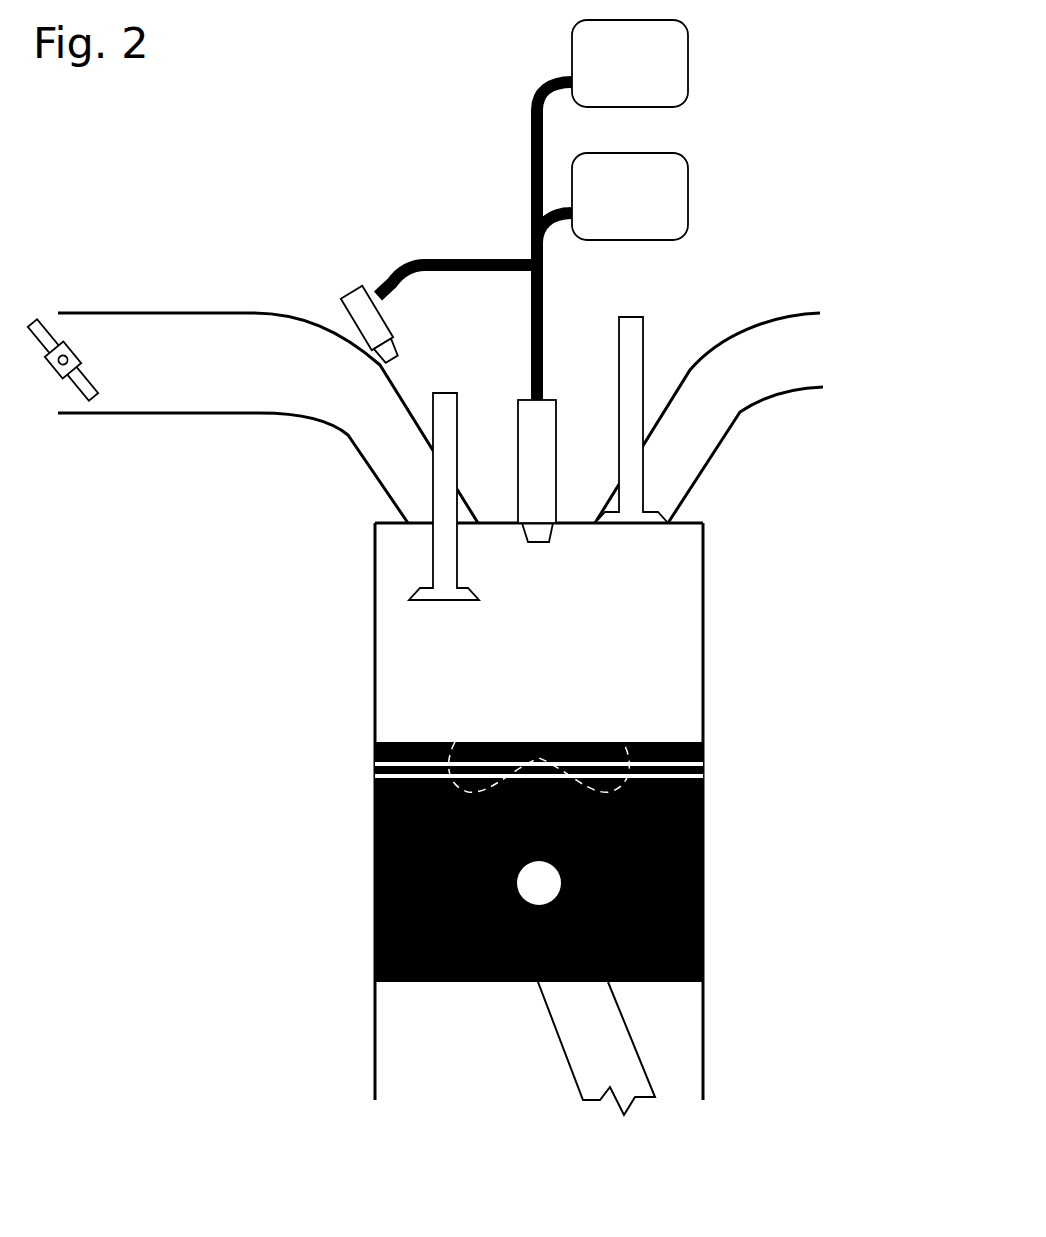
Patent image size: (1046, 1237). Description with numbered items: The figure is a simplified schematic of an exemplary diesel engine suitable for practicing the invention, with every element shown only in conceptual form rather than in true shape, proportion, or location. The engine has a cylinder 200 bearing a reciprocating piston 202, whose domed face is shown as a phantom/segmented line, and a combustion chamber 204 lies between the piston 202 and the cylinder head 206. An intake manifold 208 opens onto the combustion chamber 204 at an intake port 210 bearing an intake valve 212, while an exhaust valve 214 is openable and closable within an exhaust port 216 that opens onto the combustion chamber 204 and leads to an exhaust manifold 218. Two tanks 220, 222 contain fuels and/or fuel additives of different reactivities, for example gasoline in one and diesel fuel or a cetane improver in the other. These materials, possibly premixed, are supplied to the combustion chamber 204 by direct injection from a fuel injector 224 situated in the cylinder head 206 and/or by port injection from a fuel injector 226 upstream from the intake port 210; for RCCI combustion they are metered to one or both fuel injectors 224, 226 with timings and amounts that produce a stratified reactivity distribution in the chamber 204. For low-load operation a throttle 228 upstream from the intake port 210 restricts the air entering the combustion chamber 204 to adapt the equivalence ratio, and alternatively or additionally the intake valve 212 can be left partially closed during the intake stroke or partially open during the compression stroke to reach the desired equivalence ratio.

The cylinder 200 is at (373, 628).
The piston 202 is at (703, 953).
The combustion chamber 204 is at (640, 667).
The cylinder head 206 is at (500, 523).
The intake manifold 208 is at (268, 413).
The intake port 210 is at (408, 527).
The intake valve 212 is at (433, 557).
The exhaust valve 214 is at (643, 476).
The exhaust port 216 is at (670, 524).
The exhaust manifold 218 is at (788, 313).
The tank 220 is at (612, 198).
The tank 222 is at (612, 210).
The fuel injector 224 is at (557, 430).
The fuel injector 226 is at (362, 305).
The throttle 228 is at (90, 377).